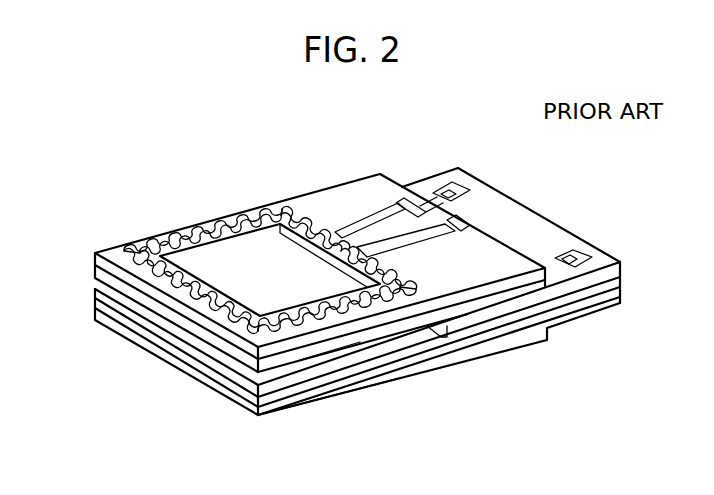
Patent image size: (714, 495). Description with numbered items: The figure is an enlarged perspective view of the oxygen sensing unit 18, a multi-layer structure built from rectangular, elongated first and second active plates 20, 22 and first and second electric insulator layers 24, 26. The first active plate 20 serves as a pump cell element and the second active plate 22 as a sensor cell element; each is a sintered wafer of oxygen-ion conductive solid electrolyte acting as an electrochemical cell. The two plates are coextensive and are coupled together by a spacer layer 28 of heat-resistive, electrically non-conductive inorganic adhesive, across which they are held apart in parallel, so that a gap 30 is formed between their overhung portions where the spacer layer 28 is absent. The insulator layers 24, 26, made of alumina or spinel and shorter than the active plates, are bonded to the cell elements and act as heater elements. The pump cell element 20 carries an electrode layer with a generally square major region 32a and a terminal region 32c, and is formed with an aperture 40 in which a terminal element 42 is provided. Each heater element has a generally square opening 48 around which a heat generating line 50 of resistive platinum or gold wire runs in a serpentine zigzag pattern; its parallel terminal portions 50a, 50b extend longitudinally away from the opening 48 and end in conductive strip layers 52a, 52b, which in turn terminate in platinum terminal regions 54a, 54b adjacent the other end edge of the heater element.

The oxygen sensing unit 18 is at (410, 390).
The first active plate 20 is at (95, 268).
The second active plate 22 is at (95, 295).
The first electric insulator layer 24 is at (96, 252).
The second electric insulator layer 26 is at (95, 312).
The spacer layer 28 is at (498, 327).
The gap 30 is at (330, 360).
The major region of electrode layer 32a is at (257, 260).
The terminal region of electrode layer 32c is at (462, 190).
The aperture 40 is at (586, 269).
The terminal element 42 is at (578, 256).
The opening 48 is at (224, 290).
The heat generating line 50 is at (198, 234).
The terminal portion of heat generating line 50a is at (324, 232).
The terminal portion of heat generating line 50b is at (384, 268).
The conductive strip layer 52a is at (370, 220).
The conductive strip layer 52b is at (452, 243).
The terminal region of conductive strip layer 54a is at (420, 208).
The terminal region of conductive strip layer 54b is at (464, 228).